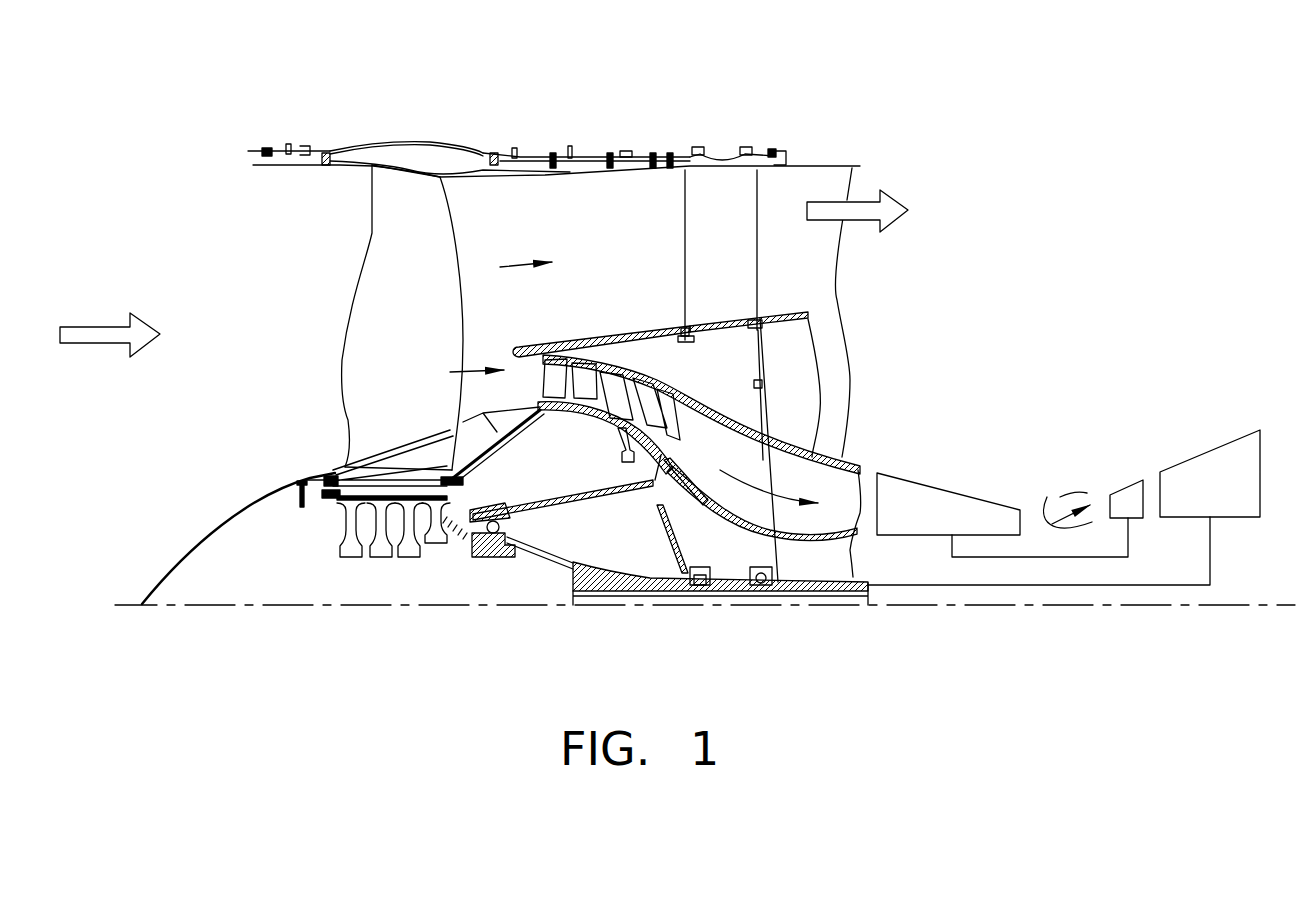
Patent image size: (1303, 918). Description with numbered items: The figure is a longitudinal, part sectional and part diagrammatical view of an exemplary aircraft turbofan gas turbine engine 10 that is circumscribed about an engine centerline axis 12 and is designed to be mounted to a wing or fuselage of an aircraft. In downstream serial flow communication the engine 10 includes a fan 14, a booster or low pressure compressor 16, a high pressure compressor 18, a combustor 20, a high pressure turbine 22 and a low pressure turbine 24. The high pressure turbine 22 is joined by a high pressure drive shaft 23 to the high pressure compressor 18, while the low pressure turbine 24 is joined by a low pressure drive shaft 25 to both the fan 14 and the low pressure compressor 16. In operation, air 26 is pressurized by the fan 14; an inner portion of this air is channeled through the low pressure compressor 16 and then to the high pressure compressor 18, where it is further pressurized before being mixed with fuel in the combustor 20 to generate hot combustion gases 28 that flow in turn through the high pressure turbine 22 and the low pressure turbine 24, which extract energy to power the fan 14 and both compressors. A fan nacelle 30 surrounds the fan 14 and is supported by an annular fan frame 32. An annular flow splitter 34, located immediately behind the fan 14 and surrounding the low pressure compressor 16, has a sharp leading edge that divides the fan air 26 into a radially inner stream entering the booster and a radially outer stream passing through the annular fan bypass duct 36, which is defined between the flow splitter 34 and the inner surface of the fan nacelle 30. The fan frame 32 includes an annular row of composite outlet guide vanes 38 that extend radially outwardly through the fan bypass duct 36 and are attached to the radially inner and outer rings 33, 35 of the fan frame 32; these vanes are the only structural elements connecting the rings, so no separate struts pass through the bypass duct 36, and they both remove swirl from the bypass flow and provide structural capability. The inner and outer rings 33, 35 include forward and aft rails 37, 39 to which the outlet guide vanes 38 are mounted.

The aircraft turbofan gas turbine engine 10 is at (1083, 86).
The engine centerline axis 12 is at (1107, 607).
The fan 14 is at (401, 305).
The low pressure compressor 16 is at (659, 439).
The high pressure compressor 18 is at (942, 525).
The combustor 20 is at (1033, 475).
The high pressure turbine 22 is at (1118, 493).
The high pressure drive shaft 23 is at (1037, 560).
The low pressure turbine 24 is at (1215, 502).
The low pressure drive shaft 25 is at (934, 587).
The air 26 is at (105, 348).
The hot combustion gases 28 is at (1067, 502).
The fan nacelle 30 is at (428, 152).
The fan frame 32 is at (753, 205).
The radially inner ring 33 is at (712, 318).
The flow splitter 34 is at (585, 332).
The radially outer ring 35 is at (723, 156).
The fan bypass duct 36 is at (600, 222).
The forward rail 37 is at (687, 158).
The composite outlet guide vanes 38 is at (736, 235).
The aft rail 39 is at (768, 152).